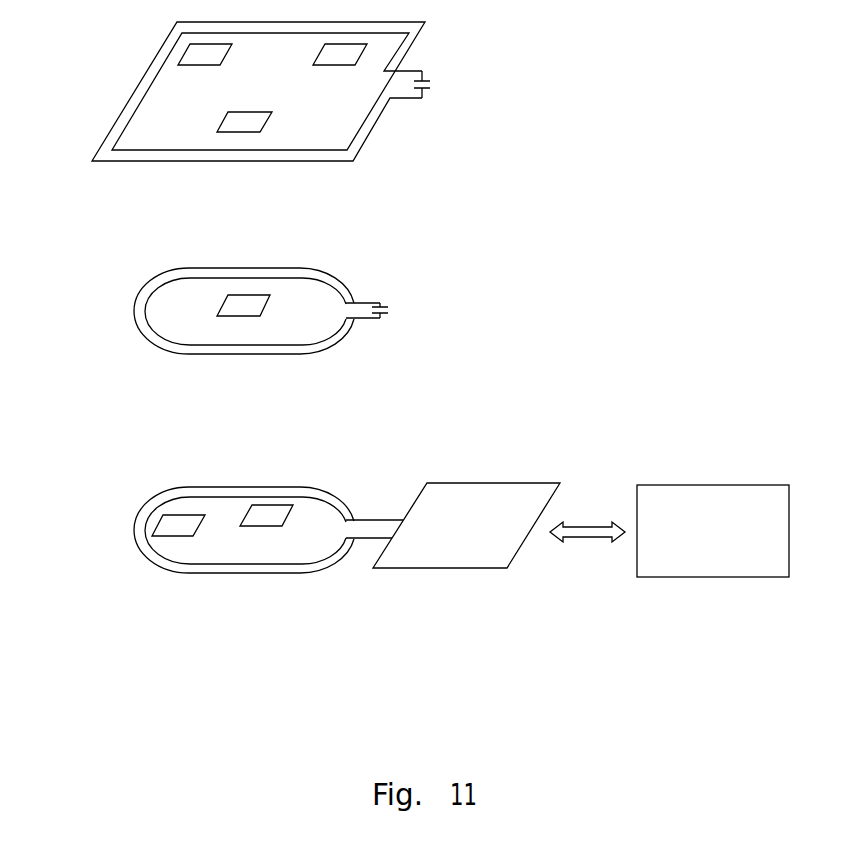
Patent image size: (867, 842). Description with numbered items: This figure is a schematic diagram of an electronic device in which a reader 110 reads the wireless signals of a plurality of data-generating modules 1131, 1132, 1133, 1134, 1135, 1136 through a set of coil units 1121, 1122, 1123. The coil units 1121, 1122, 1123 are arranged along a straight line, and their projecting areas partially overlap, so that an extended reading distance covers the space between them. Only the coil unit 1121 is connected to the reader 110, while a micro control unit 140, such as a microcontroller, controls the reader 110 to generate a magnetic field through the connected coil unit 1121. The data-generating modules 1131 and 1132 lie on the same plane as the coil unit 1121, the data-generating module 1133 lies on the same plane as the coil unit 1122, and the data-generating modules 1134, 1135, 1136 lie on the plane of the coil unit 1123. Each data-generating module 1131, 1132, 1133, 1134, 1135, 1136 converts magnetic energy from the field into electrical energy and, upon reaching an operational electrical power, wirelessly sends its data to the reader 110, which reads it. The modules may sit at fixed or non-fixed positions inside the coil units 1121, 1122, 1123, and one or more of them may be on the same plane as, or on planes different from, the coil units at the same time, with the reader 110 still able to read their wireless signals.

The reader 110 is at (438, 570).
The micro control unit 140 is at (712, 578).
The coil unit 1121 is at (134, 529).
The coil unit 1122 is at (134, 309).
The coil unit 1123 is at (146, 73).
The data-generating module 1131 is at (177, 536).
The data-generating module 1132 is at (260, 526).
The data-generating module 1133 is at (268, 300).
The data-generating module 1134 is at (229, 50).
The data-generating module 1135 is at (270, 120).
The data-generating module 1136 is at (333, 65).